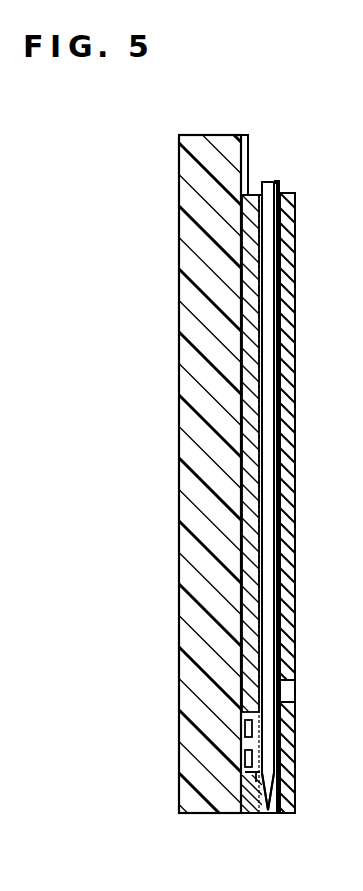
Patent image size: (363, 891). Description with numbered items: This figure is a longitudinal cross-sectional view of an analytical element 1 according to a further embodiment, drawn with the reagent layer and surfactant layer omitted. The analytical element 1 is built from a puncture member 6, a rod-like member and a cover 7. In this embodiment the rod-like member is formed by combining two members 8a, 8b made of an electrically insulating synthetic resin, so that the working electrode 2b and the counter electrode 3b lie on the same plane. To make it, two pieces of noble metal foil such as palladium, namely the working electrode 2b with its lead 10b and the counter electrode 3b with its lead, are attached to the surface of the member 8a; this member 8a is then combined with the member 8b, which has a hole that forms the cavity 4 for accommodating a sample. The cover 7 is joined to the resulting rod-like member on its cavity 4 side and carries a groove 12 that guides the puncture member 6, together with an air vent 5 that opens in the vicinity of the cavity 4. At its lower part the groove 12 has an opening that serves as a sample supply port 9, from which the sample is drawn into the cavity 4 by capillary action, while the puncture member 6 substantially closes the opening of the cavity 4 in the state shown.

The analytical element 1 is at (170, 287).
The member 8a is at (200, 365).
The member 8b is at (245, 447).
The lead 10b is at (248, 146).
The puncture member 6 is at (270, 185).
The groove 12 is at (290, 262).
The cover 7 is at (287, 543).
The air vent 5 is at (295, 697).
The working electrode 2b is at (245, 723).
The counter electrode 3b is at (245, 762).
The cavity 4 is at (252, 813).
The sample supply port 9 is at (280, 813).